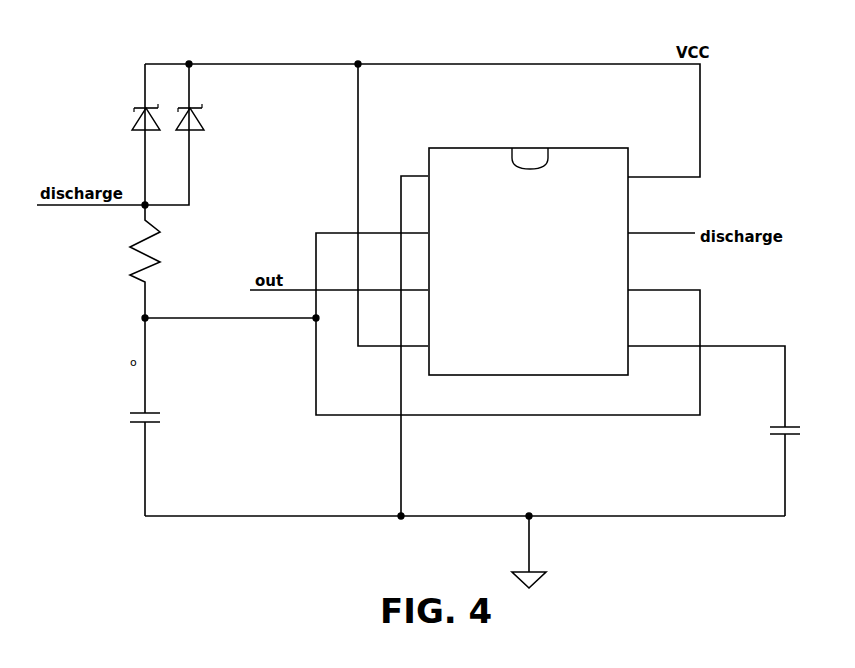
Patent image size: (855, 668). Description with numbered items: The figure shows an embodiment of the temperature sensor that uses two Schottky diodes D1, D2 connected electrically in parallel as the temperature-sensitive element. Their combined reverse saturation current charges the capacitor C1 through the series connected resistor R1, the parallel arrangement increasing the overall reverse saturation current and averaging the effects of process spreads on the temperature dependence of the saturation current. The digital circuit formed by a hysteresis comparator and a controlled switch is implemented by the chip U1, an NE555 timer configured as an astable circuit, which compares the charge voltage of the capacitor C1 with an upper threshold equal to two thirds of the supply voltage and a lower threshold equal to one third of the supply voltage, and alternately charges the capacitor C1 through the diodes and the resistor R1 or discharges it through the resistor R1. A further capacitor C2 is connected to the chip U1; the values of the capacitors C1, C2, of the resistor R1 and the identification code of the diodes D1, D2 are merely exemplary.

The Schottky diode D1 is at (147, 134).
The Schottky diode D2 is at (174, 134).
The resistor R1 is at (168, 261).
The capacitor C1 is at (152, 417).
The capacitor C2 is at (726, 431).
The NE555 chip U1 is at (528, 261).